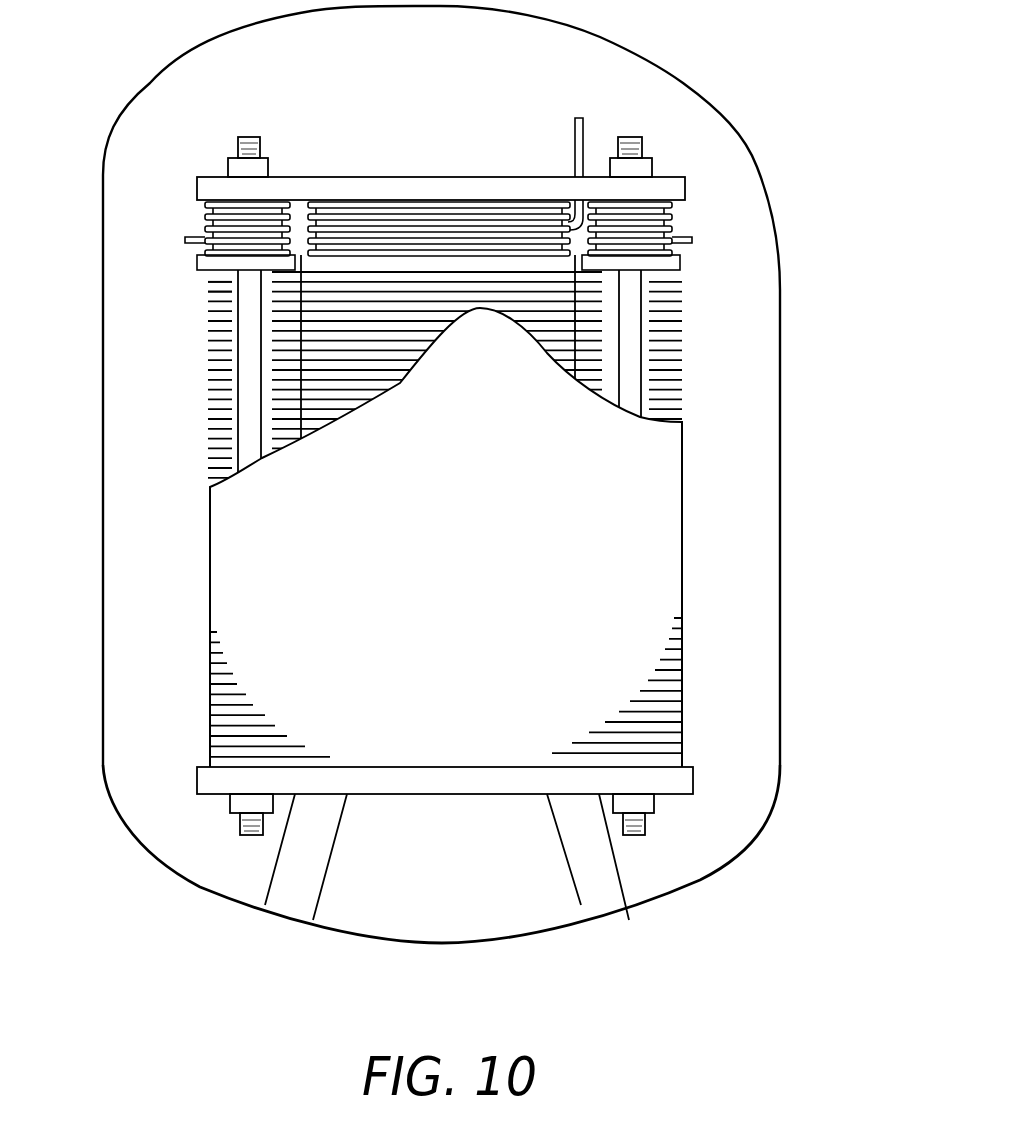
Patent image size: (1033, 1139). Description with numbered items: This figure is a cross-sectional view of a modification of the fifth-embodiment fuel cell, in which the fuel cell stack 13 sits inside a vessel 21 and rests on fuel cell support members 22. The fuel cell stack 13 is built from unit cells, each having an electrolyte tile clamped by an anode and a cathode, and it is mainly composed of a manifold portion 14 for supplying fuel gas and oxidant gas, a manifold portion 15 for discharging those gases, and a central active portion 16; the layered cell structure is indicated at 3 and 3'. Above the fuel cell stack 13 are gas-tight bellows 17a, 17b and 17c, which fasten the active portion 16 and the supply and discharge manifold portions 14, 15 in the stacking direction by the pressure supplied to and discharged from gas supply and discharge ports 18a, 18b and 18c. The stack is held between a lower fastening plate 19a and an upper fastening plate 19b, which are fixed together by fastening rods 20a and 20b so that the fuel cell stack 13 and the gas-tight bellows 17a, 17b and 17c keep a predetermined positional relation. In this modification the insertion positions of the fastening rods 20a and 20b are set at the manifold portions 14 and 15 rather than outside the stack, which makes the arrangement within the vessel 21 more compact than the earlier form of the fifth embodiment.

The core lamination 3 is at (143, 261).
The core lamination 3' is at (143, 311).
The fuel cell stack 13 is at (635, 557).
The manifold portion 14 is at (208, 385).
The manifold portion 15 is at (648, 331).
The active portion 16 is at (350, 302).
The gas-tight bellows 17a is at (430, 215).
The gas-tight bellows 17b is at (637, 210).
The gas-tight bellows 17c is at (263, 217).
The gas supply and discharge port 18a is at (579, 112).
The gas supply and discharge port 18b is at (690, 240).
The gas supply and discharge port 18c is at (182, 240).
The lower fastening plate 19a is at (677, 778).
The upper fastening plate 19b is at (670, 190).
The fastening rod 20a is at (627, 407).
The fastening rod 20b is at (250, 424).
The vessel 21 is at (781, 622).
The fuel cell support members 22 is at (320, 887).